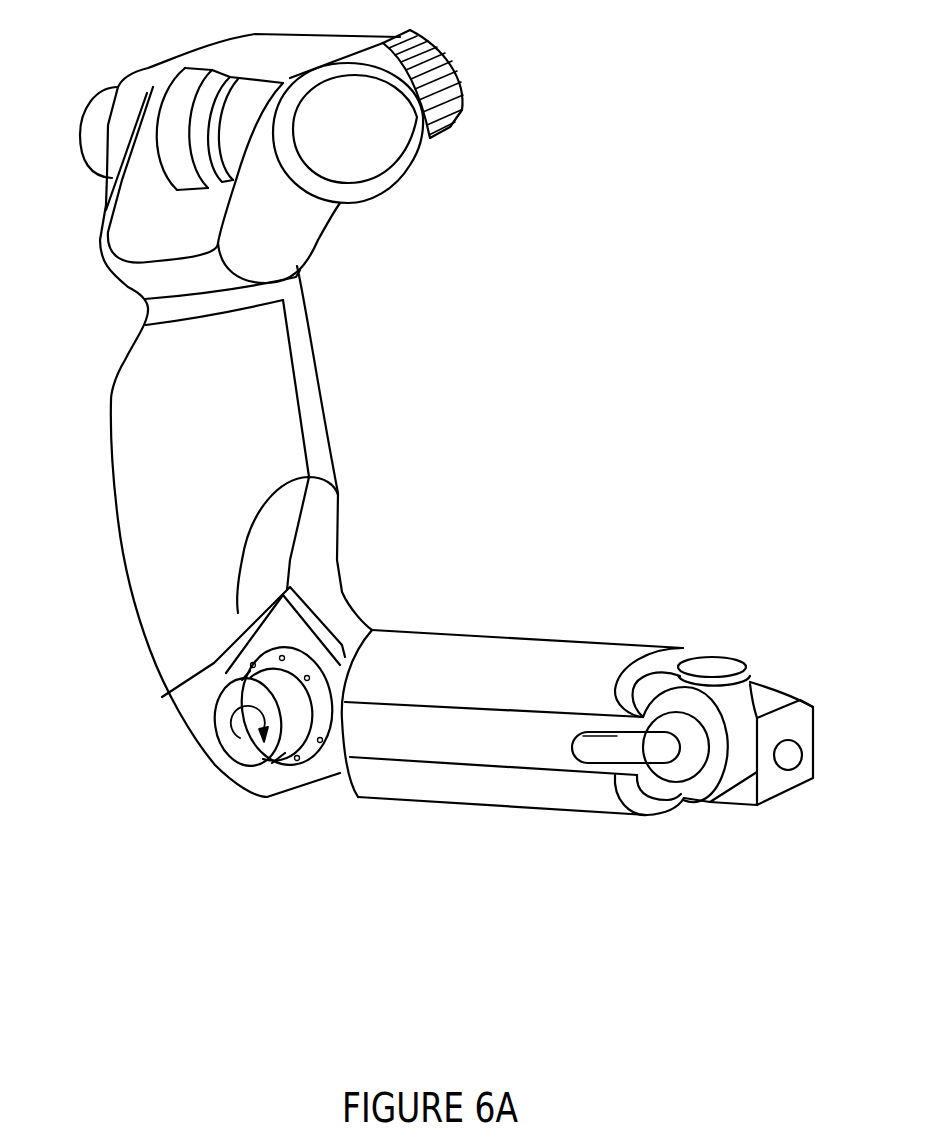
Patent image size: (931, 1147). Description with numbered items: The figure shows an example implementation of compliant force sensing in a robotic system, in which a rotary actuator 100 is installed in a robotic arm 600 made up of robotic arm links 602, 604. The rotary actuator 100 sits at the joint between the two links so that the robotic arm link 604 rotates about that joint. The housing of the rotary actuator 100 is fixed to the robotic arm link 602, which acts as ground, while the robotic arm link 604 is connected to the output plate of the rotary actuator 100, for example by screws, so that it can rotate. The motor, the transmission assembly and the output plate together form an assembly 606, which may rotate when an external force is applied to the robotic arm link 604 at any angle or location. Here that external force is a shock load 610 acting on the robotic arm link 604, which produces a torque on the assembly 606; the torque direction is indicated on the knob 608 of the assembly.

The robotic arm 600 is at (433, 525).
The robotic arm link 602 is at (163, 784).
The robotic arm link 604 is at (674, 843).
The assembly 606 is at (293, 730).
The torque knob 608 is at (225, 729).
The shock load 610 is at (587, 500).
The rotary actuator 100 is at (313, 658).